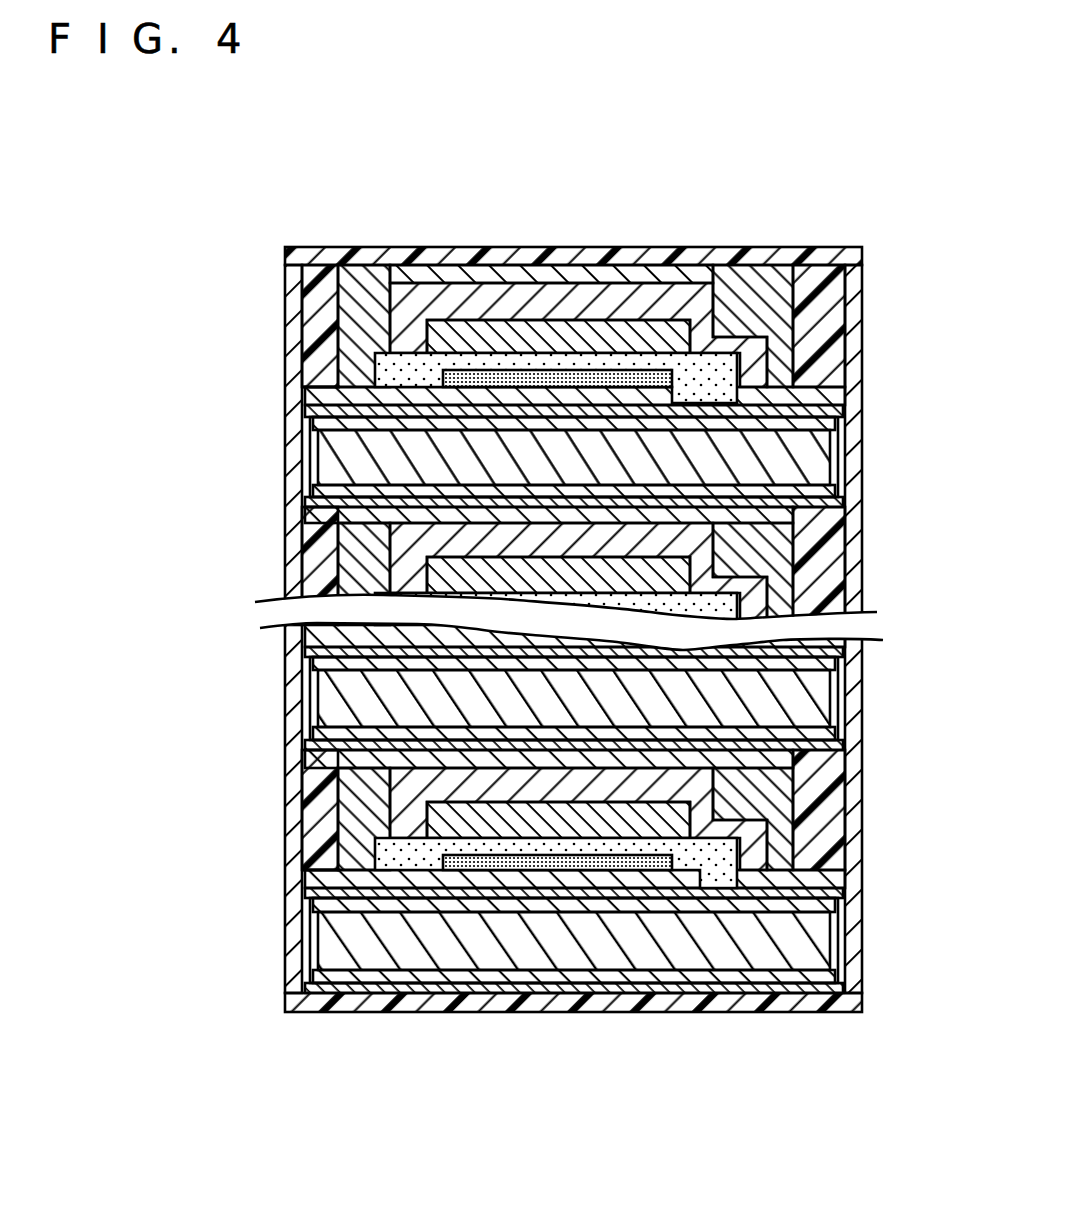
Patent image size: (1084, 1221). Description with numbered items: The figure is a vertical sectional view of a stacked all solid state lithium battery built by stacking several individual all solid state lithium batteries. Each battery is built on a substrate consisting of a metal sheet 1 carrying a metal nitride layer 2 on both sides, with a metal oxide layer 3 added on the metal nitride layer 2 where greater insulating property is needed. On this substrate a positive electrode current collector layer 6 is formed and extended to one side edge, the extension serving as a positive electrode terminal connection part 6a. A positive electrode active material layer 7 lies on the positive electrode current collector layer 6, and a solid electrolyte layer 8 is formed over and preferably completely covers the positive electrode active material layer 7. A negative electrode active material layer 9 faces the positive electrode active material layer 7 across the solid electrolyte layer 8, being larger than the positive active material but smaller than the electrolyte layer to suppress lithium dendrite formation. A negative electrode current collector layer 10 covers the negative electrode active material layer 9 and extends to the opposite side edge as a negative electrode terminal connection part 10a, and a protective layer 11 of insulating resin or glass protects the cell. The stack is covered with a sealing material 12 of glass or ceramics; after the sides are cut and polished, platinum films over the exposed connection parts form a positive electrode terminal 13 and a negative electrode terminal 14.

The metal sheet 1 is at (340, 470).
The metal nitride layer 2 is at (308, 433).
The metal oxide layer 3 is at (843, 510).
The positive electrode current collector layer 6 is at (312, 394).
The positive electrode terminal connection part 6a is at (322, 376).
The positive electrode active material layer 7 is at (546, 377).
The solid electrolyte layer 8 is at (403, 368).
The negative electrode active material layer 9 is at (622, 330).
The negative electrode current collector layer 10 is at (490, 305).
The negative electrode terminal connection part 10a is at (828, 382).
The protective layer 11 is at (746, 290).
The sealing material 12 is at (813, 287).
The positive electrode terminal 13 is at (293, 715).
The negative electrode terminal 14 is at (848, 698).